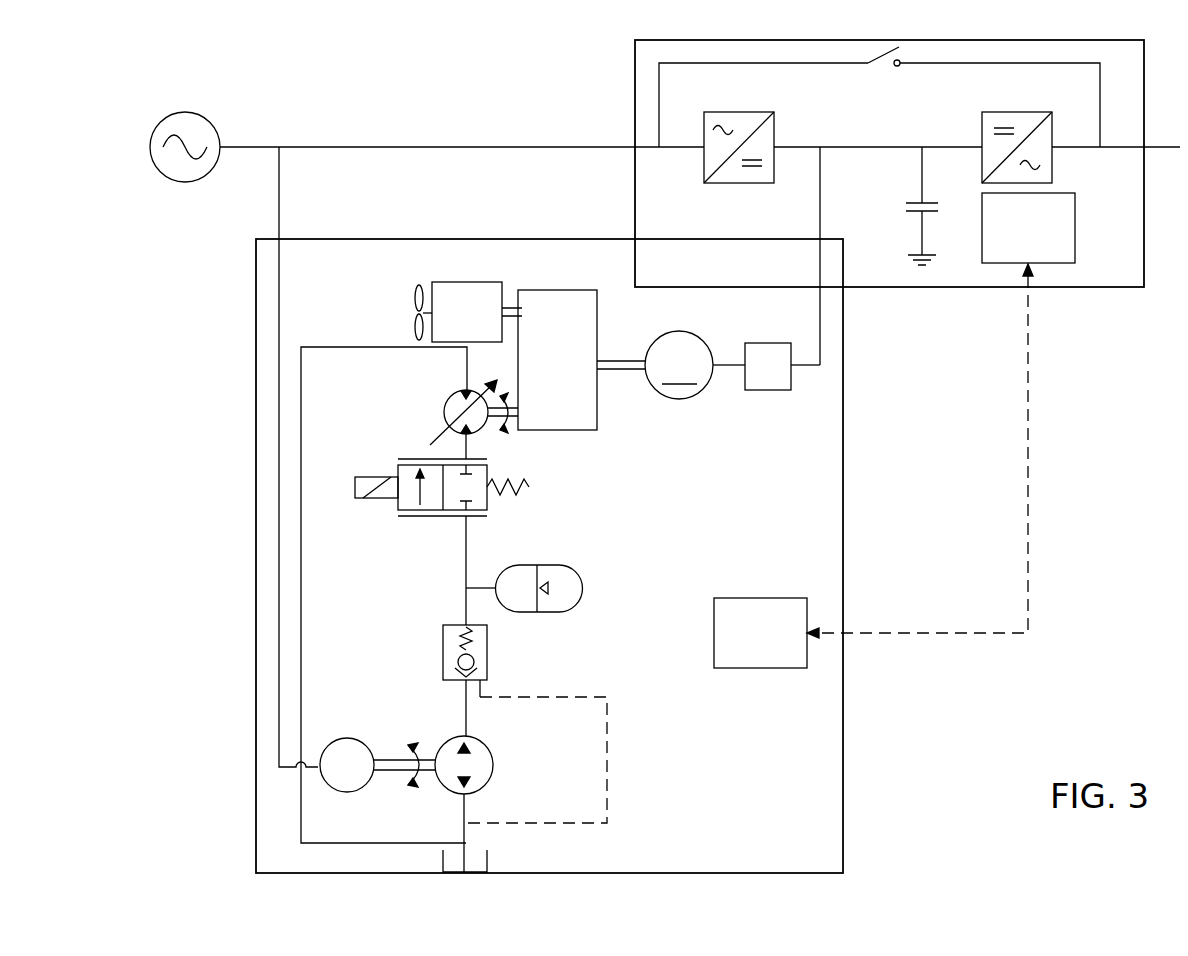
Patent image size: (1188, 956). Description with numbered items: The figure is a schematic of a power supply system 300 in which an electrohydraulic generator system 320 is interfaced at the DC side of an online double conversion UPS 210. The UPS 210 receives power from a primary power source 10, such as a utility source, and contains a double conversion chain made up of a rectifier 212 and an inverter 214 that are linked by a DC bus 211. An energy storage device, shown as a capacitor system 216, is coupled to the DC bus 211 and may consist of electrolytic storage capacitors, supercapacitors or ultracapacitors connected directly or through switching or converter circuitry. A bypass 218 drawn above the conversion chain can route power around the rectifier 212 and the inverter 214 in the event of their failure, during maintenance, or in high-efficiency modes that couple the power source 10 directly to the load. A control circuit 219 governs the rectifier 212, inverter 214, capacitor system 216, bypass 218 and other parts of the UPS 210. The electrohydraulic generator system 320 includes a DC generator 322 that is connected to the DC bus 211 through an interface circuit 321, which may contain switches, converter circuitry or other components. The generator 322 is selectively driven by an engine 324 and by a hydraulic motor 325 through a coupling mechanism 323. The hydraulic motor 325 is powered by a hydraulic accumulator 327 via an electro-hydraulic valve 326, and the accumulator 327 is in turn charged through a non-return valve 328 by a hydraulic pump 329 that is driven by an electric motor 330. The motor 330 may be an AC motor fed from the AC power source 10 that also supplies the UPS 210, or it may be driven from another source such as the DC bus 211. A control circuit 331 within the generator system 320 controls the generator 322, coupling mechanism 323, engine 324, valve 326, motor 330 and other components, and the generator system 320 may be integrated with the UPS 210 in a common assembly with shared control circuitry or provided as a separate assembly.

The primary power source 10 is at (185, 112).
The online double conversion UPS 210 is at (893, 40).
The DC bus 211 is at (852, 147).
The rectifier 212 is at (741, 112).
The inverter 214 is at (1023, 112).
The capacitor system 216 is at (901, 212).
The bypass 218 is at (884, 77).
The control circuit 219 is at (1075, 228).
The power supply system 300 is at (1050, 647).
The electrohydraulic generator system 320 is at (549, 239).
The interface circuit 321 is at (767, 343).
The DC generator 322 is at (681, 399).
The coupling mechanism 323 is at (558, 430).
The engine 324 is at (467, 282).
The hydraulic motor 325 is at (444, 405).
The electro-hydraulic valve 326 is at (355, 487).
The hydraulic accumulator 327 is at (537, 612).
The non-return valve 328 is at (443, 650).
The hydraulic pump 329 is at (493, 768).
The electric motor 330 is at (349, 738).
The control circuit 331 is at (760, 598).